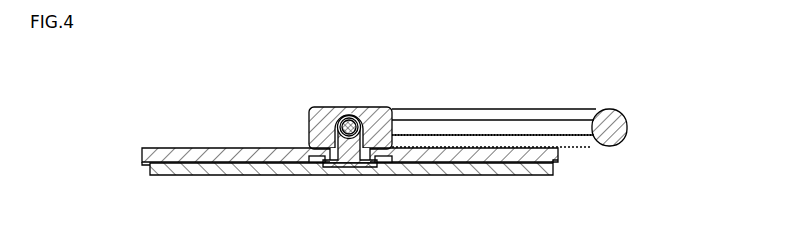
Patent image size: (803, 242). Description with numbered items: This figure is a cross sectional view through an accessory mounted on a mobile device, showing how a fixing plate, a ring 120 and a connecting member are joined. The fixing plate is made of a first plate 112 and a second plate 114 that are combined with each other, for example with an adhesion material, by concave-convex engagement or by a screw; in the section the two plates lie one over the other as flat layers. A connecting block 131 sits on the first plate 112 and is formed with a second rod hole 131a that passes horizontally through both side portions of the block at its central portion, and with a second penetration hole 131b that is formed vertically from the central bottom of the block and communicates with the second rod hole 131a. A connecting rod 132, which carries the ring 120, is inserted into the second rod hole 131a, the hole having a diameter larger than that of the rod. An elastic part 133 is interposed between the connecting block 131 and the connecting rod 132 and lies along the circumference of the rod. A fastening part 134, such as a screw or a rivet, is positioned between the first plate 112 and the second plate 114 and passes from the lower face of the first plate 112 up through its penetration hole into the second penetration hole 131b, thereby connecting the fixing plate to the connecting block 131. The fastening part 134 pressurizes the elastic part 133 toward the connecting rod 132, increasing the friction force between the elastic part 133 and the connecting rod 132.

The first plate 112 is at (197, 150).
The second plate 114 is at (196, 177).
The ring 120 is at (543, 110).
The connecting block 131 is at (310, 107).
The second rod hole 131a is at (309, 128).
The second penetration hole 131b is at (316, 176).
The connecting rod 132 is at (366, 109).
The elastic part 133 is at (342, 111).
The fastening part 134 is at (352, 176).